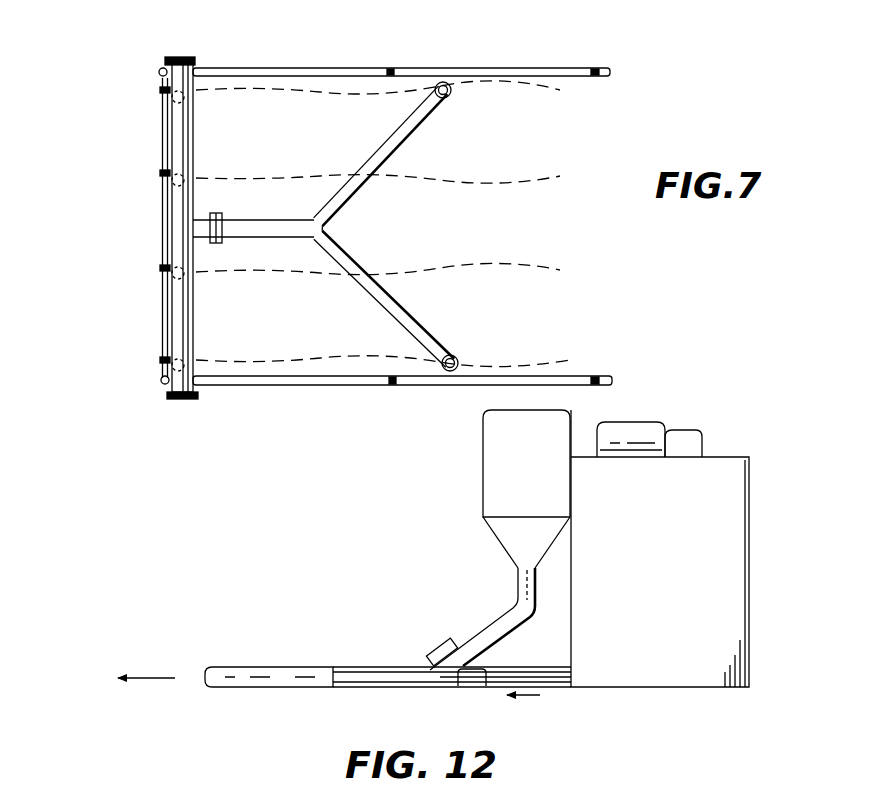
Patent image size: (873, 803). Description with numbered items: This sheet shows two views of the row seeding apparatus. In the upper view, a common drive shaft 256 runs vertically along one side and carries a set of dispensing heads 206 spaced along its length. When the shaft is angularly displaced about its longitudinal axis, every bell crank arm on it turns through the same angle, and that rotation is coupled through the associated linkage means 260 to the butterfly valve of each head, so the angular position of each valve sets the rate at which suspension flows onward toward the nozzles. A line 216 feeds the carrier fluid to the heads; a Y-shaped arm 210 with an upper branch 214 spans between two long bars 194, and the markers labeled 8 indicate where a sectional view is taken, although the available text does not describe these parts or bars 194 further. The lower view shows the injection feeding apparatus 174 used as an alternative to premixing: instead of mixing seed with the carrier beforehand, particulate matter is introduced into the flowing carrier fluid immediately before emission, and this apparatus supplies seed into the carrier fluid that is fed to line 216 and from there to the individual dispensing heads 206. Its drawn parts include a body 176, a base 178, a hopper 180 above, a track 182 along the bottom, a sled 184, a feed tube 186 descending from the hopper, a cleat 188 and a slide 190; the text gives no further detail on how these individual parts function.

In FIG. 7, the support bar 194 is at (317, 90).
In FIG. 7, the linkage means 260 is at (163, 172).
In FIG. 7, the dispensing heads 206 is at (184, 102).
In FIG. 7, the common drive shaft 256 is at (163, 242).
In FIG. 7, the pivot arm 210 is at (418, 124).
In FIG. 7, the upper arm 214 is at (326, 204).
In FIG. 7, the line 216 is at (300, 238).
In FIG. 7, the section line 8 is at (153, 231).
In FIG. 12, the feeding apparatus 174 is at (440, 542).
In FIG. 12, the machine body 176 is at (718, 535).
In FIG. 12, the base 178 is at (560, 688).
In FIG. 12, the hopper 180 is at (518, 447).
In FIG. 12, the track 182 is at (418, 692).
In FIG. 12, the sled 184 is at (437, 647).
In FIG. 12, the feed tube 186 is at (490, 622).
In FIG. 12, the cleat 188 is at (525, 628).
In FIG. 12, the slide 190 is at (465, 688).